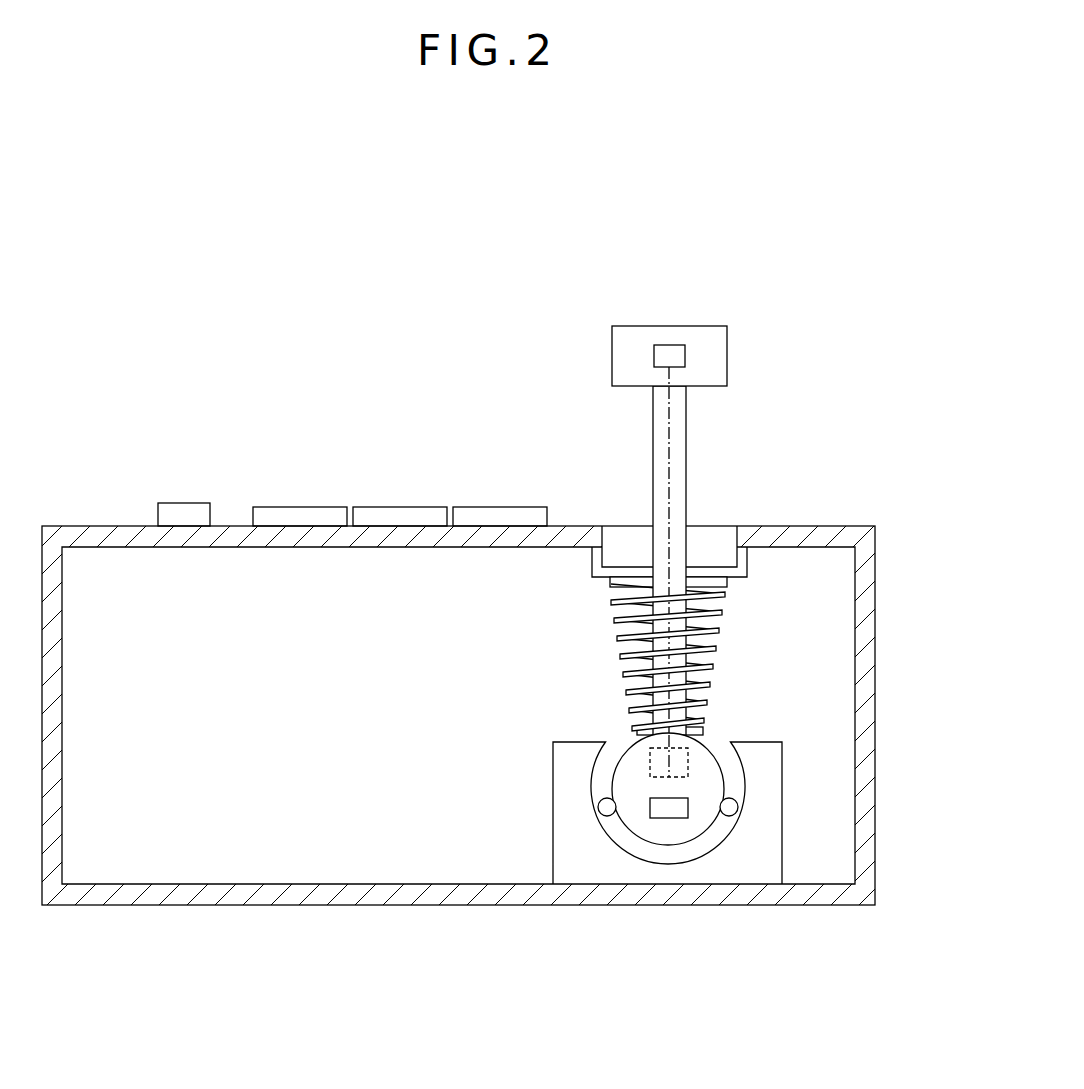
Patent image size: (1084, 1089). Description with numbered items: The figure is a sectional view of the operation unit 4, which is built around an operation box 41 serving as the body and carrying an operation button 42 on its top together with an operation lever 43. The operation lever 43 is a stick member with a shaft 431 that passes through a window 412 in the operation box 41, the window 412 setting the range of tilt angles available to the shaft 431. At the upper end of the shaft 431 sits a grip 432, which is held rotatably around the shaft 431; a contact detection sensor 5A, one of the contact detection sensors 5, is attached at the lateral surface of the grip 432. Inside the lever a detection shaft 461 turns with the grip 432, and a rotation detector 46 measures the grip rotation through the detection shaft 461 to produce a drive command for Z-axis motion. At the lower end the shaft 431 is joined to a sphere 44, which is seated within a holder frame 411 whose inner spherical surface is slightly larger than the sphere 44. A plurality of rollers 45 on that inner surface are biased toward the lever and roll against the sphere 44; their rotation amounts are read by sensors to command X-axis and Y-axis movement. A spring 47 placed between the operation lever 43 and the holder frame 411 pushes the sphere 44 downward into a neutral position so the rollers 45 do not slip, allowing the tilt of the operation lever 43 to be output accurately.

The operation unit 4 is at (775, 170).
The contact detection sensors 5 is at (672, 348).
The contact detection sensor 5A is at (700, 314).
The operation box 41 is at (875, 640).
The holder frame 411 is at (742, 780).
The window 412 is at (688, 566).
The operation button 42 is at (432, 507).
The operation lever 43 is at (828, 340).
The shaft 431 is at (677, 437).
The grip 432 is at (727, 352).
The sphere 44 is at (712, 745).
The rollers 45 is at (606, 805).
The rotation detector 46 is at (647, 758).
The detection shaft 461 is at (670, 468).
The spring 47 is at (718, 638).